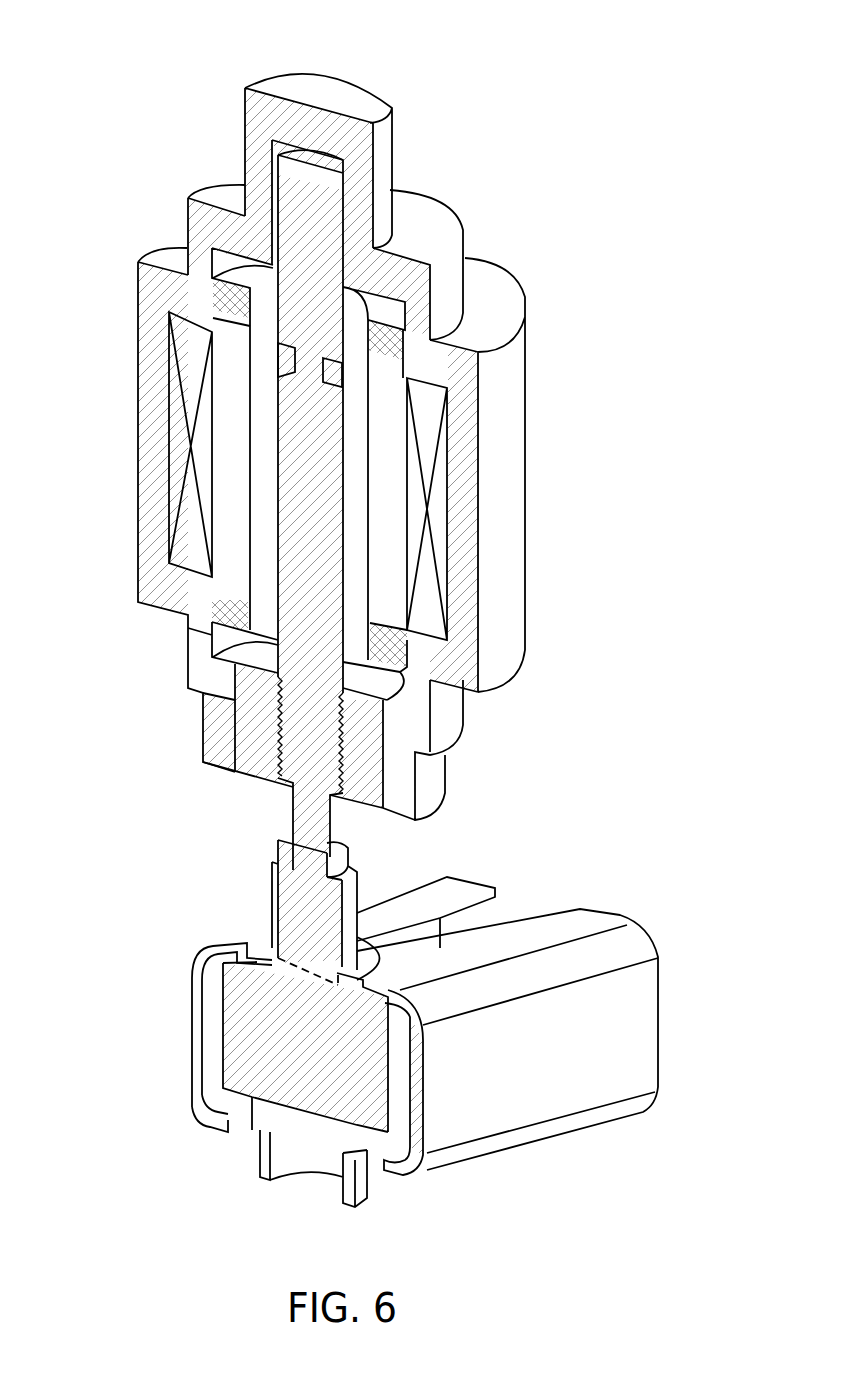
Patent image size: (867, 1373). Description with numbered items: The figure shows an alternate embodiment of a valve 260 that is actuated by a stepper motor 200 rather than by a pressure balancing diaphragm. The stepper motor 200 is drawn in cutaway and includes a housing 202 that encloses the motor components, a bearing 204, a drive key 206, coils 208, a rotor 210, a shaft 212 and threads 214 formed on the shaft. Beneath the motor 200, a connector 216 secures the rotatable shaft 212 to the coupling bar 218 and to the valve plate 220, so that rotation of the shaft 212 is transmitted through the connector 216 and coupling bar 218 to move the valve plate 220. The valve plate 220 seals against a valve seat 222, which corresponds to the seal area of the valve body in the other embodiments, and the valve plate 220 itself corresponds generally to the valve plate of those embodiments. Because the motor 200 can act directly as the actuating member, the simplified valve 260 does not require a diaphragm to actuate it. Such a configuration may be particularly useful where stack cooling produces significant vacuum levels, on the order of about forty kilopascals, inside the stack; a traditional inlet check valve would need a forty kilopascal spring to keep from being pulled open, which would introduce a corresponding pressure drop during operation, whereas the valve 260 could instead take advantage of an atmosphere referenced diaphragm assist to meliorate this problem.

The stepper motor 200 is at (150, 90).
The housing 202 is at (193, 215).
The bearing 204 is at (227, 303).
The drive key 206 is at (330, 325).
The coils 208 is at (178, 418).
The rotor 210 is at (233, 463).
The shaft 212 is at (290, 548).
The threads 214 is at (275, 760).
The connector 216 is at (270, 878).
The coupling bar 218 is at (193, 975).
The valve plate 220 is at (270, 1115).
The valve seat 222 is at (262, 1170).
The valve 260 is at (140, 1043).